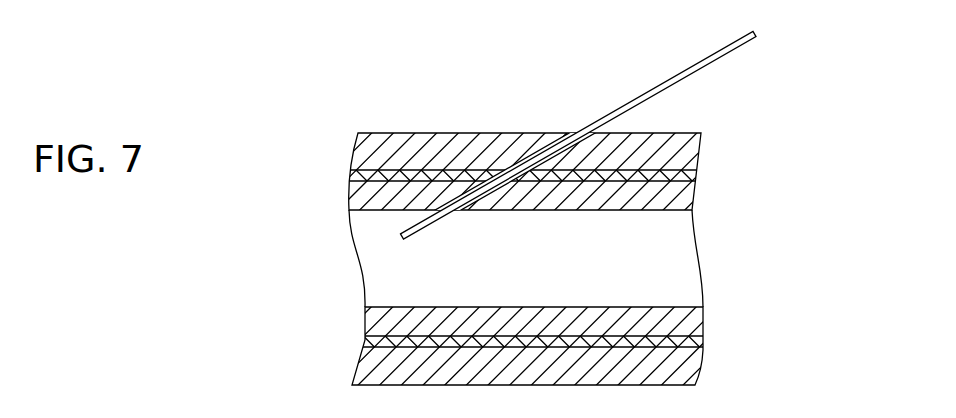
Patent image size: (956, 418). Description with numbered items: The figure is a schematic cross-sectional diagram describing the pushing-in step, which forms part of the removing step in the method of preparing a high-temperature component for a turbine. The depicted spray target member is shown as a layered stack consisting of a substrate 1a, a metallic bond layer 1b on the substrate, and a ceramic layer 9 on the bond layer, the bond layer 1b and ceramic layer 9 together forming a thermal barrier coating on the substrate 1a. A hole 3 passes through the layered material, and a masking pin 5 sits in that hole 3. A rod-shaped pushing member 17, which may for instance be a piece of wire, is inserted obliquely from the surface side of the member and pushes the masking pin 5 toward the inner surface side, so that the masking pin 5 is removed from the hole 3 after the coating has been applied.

The pushing member 17 is at (655, 88).
The masking pin 5 is at (565, 133).
The hole 3 is at (501, 183).
The ceramic layer 9 is at (697, 150).
The bond layer 1b is at (693, 176).
The substrate 1a is at (696, 193).